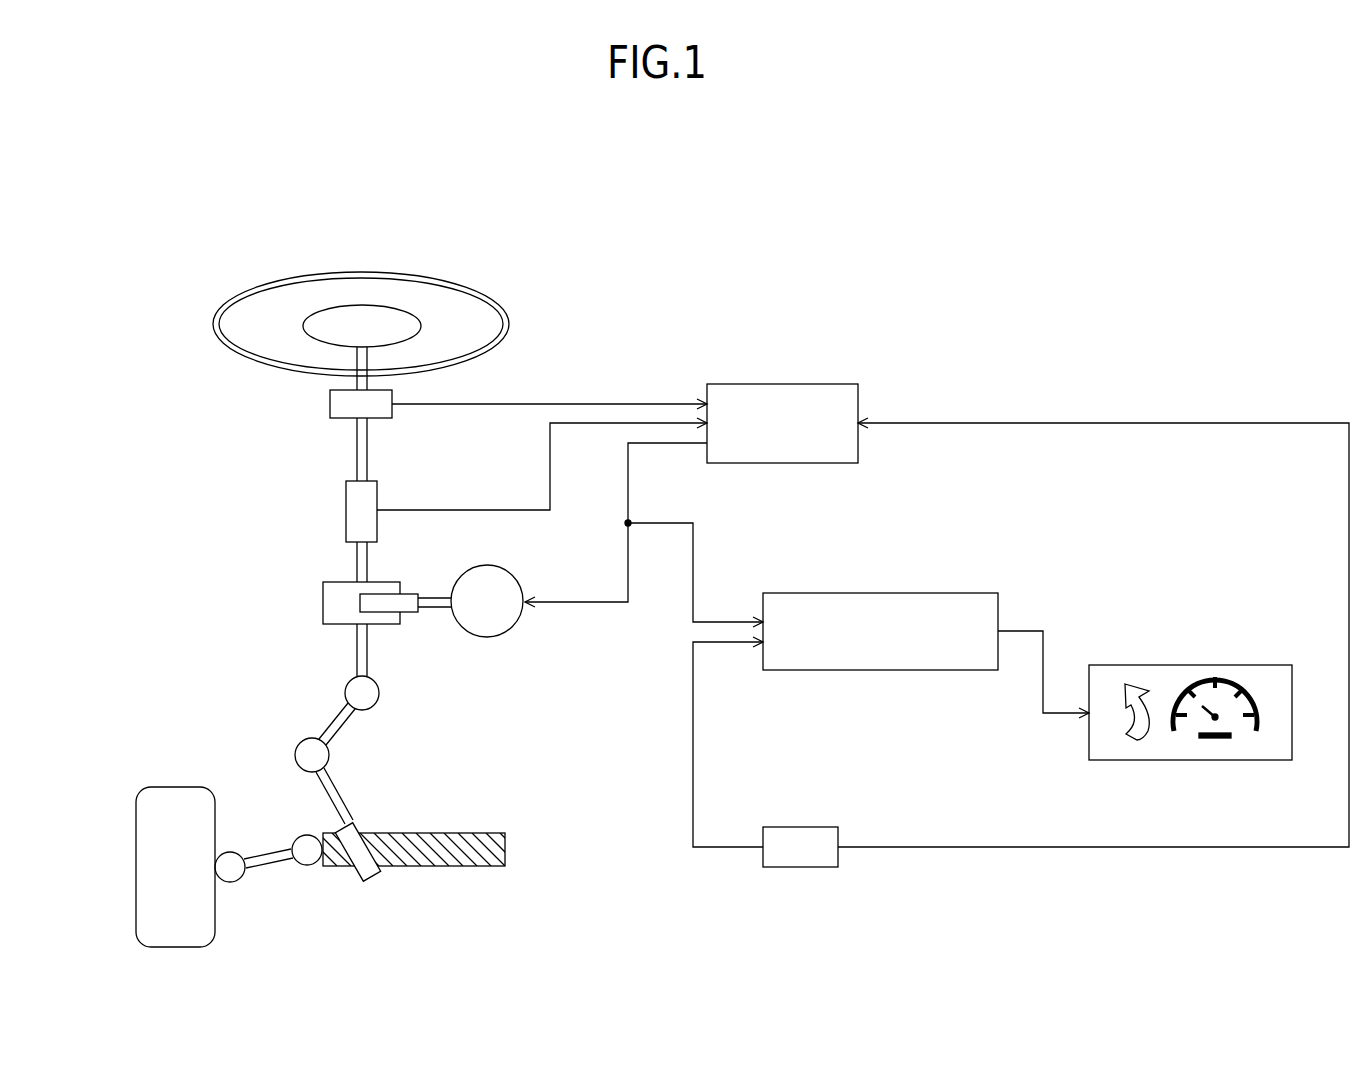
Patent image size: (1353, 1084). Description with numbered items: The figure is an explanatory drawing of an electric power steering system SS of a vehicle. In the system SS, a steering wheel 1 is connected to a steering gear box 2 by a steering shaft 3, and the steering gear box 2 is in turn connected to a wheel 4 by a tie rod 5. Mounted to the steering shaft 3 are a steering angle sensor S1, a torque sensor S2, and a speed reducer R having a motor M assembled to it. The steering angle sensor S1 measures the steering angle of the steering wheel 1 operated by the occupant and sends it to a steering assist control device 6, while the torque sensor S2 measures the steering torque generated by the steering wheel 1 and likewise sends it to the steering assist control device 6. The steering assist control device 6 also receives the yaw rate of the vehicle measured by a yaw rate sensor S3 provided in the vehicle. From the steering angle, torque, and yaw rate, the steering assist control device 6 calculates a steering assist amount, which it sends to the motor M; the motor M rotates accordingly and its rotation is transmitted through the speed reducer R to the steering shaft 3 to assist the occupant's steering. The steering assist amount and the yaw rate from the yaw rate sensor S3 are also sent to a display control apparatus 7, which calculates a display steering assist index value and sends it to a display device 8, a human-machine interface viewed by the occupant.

The electric power steering system SS is at (182, 210).
The steering wheel 1 is at (425, 275).
The steering gear box 2 is at (438, 866).
The steering shaft 3 is at (335, 720).
The wheel 4 is at (135, 893).
The tie rod 5 is at (278, 866).
The steering assist control device 6 is at (800, 384).
The display control apparatus 7 is at (905, 593).
The display device 8 is at (1203, 665).
The steering angle sensor S1 is at (330, 405).
The torque sensor S2 is at (346, 515).
The yaw rate sensor S3 is at (786, 868).
The speed reducer R is at (323, 603).
The motor M is at (503, 636).